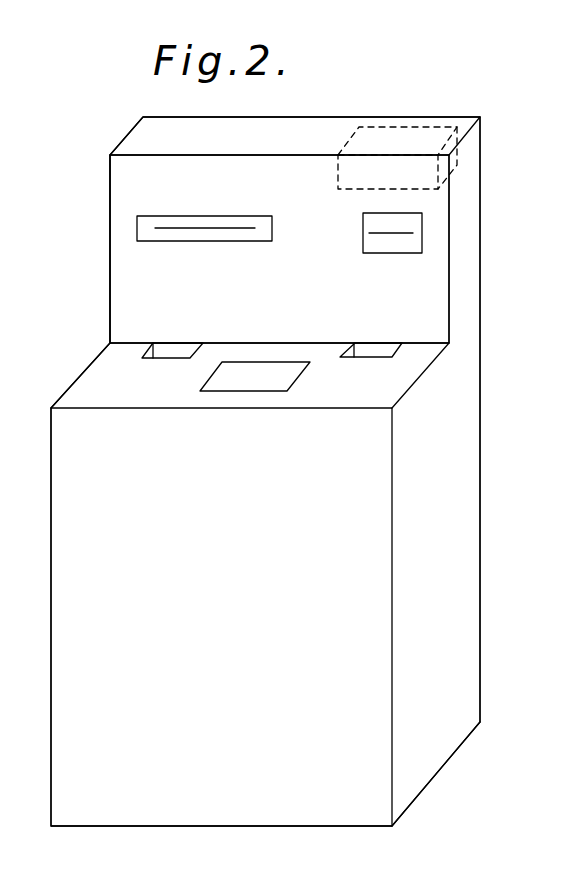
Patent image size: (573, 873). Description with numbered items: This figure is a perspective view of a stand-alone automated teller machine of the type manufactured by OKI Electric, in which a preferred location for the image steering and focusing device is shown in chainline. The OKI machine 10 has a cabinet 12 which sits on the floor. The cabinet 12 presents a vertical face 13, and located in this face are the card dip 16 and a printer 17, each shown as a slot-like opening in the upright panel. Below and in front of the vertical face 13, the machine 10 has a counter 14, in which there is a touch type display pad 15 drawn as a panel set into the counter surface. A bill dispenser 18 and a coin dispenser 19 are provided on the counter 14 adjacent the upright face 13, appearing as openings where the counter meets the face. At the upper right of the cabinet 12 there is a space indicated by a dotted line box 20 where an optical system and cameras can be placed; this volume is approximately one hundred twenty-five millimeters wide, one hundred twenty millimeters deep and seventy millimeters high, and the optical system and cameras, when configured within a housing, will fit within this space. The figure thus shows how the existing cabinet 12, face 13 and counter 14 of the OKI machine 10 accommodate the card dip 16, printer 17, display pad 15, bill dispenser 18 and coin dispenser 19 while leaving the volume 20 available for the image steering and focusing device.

The OKI machine 10 is at (112, 132).
The cabinet 12 is at (468, 210).
The vertical face 13 is at (308, 303).
The counter 14 is at (380, 390).
The touch type display pad 15 is at (275, 385).
The card dip 16 is at (405, 248).
The printer 17 is at (147, 236).
The bill dispenser 18 is at (387, 347).
The coin dispenser 19 is at (172, 352).
The dotted line box 20 is at (382, 127).